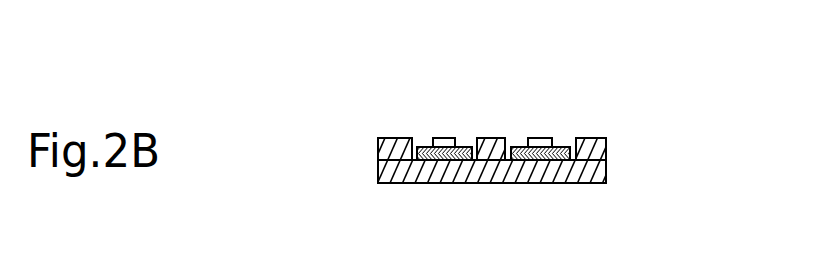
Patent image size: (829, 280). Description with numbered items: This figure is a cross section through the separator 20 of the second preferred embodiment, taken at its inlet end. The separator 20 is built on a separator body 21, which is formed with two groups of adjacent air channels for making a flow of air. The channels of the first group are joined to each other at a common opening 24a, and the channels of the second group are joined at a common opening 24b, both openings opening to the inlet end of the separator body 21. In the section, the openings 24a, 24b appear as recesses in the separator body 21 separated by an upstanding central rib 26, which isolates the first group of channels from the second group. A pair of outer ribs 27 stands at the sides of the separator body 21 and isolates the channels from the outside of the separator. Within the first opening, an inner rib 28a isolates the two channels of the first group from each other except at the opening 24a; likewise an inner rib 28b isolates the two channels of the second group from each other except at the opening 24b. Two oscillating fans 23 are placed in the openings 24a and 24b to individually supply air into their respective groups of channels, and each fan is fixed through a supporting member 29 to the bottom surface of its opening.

The separator 20 is at (371, 95).
The separator body 21 is at (578, 172).
The oscillating fans 23 is at (496, 152).
The common opening 24a is at (574, 138).
The common opening 24b is at (414, 138).
The central rib 26 is at (492, 138).
The outer ribs 27 is at (598, 157).
The inner rib 28a is at (540, 138).
The inner rib 28b is at (444, 138).
The supporting members 29 is at (537, 178).